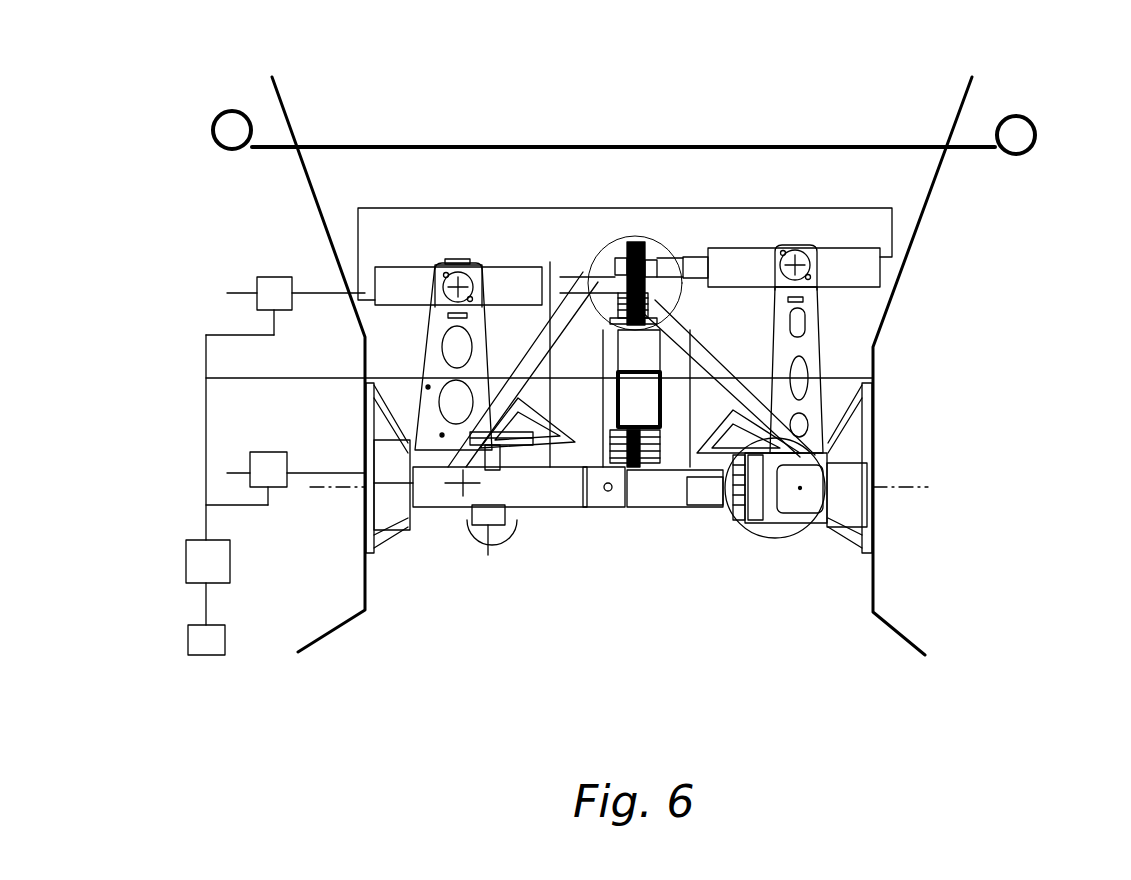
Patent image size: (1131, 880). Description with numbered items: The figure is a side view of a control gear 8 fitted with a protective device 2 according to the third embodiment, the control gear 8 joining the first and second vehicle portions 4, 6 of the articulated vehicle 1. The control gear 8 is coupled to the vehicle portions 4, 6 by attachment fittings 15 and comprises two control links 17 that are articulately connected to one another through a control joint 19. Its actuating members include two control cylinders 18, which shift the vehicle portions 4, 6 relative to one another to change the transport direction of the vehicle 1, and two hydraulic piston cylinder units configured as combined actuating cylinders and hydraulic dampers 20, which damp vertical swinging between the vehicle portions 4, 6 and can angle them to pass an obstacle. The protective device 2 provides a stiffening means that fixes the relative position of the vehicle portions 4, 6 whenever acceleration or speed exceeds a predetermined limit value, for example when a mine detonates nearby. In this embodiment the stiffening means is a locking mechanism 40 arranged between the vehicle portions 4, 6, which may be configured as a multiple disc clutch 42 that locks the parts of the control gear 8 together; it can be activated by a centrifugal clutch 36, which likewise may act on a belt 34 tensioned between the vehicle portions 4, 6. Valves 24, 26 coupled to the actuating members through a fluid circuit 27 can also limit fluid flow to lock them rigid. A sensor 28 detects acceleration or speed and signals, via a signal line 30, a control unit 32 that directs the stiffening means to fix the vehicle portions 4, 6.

The articulated vehicle 1 is at (392, 118).
The protective device 2 is at (245, 255).
The first vehicle portion 4 is at (320, 208).
The second vehicle portion 6 is at (921, 206).
The control gear 8 is at (655, 543).
The attachment fittings 15 is at (388, 533).
The control links 17 is at (517, 367).
The control cylinders 18 is at (560, 512).
The control joint 19 is at (633, 242).
The combined actuating cylinders and hydraulic dampers 20 is at (385, 265).
The valve 24 is at (292, 305).
The valve 26 is at (287, 487).
The fluid circuit 27 is at (460, 205).
The sensor 28 is at (188, 645).
The signal line 30 is at (206, 462).
The control unit 32 is at (186, 560).
The belt 34 is at (800, 146).
The centrifugal clutch 36 is at (214, 116).
The locking mechanism 40 is at (660, 362).
The multiple disc clutch 42 is at (645, 467).